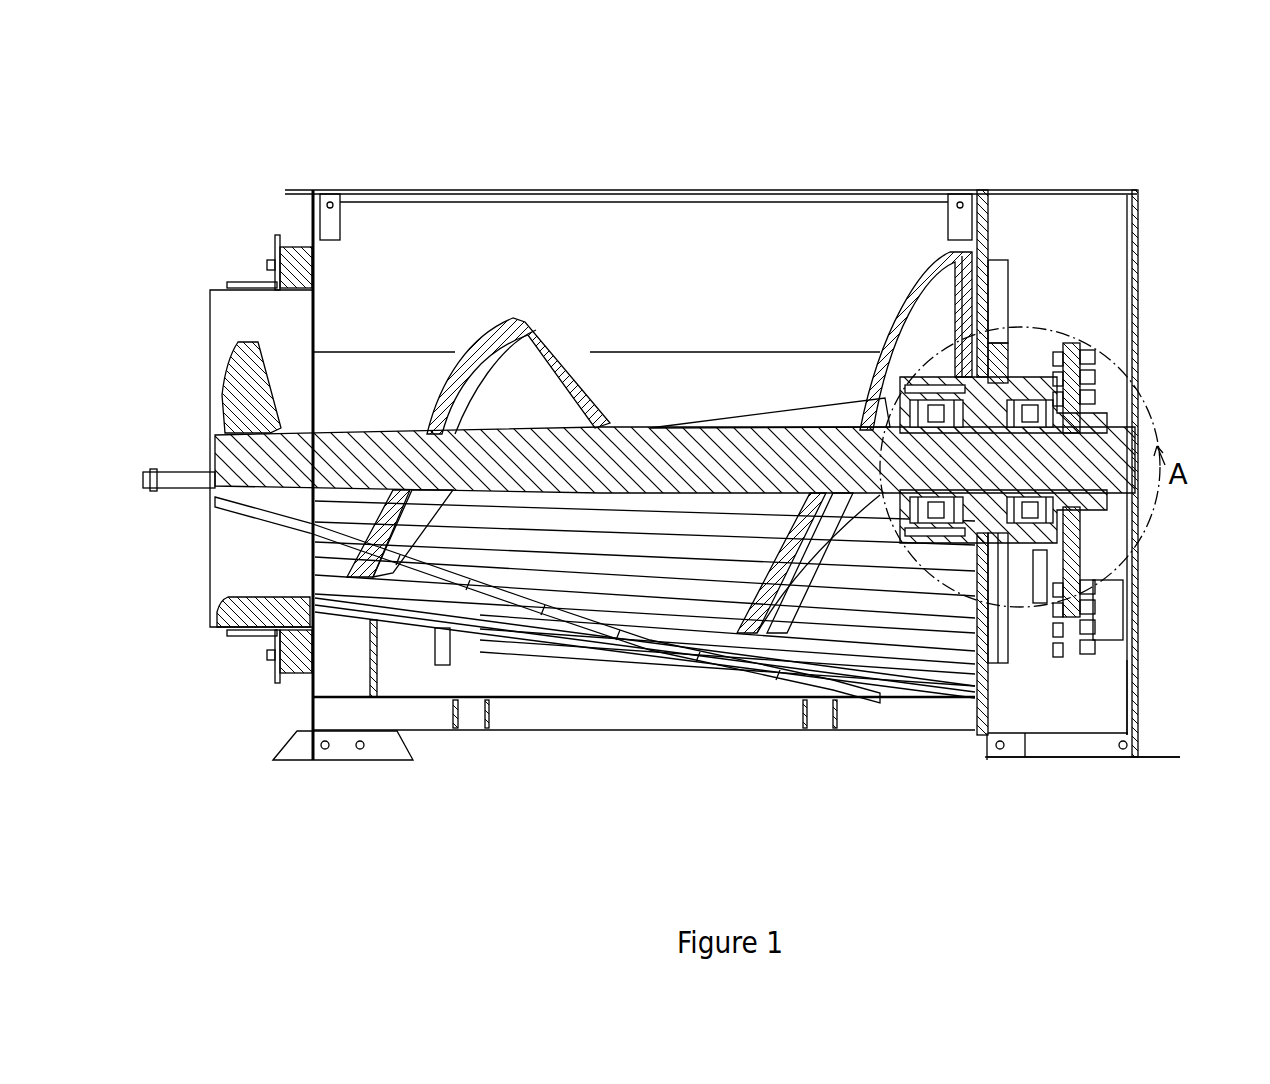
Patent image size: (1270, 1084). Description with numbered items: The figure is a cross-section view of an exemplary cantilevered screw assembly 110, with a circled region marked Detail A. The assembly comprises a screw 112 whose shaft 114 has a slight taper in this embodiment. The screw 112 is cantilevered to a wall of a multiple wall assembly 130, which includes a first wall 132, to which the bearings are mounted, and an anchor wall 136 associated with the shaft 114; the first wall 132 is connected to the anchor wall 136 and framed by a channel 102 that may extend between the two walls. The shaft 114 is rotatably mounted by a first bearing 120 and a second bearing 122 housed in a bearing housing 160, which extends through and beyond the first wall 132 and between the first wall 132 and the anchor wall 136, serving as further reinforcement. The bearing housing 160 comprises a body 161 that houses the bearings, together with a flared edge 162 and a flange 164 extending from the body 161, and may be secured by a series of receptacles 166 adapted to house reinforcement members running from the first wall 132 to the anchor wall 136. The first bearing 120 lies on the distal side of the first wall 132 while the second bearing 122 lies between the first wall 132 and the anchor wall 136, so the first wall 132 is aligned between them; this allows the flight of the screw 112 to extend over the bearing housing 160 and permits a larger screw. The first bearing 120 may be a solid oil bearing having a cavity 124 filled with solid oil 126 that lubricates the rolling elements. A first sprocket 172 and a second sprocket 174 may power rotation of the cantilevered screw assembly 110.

The channel 102 is at (1048, 745).
The cantilevered screw assembly 110 is at (798, 157).
The screw 112 is at (503, 325).
The shaft 114 is at (647, 440).
The first bearing 120 is at (935, 535).
The second bearing 122 is at (975, 600).
The cavity 124 is at (912, 525).
The solid oil 126 is at (880, 515).
The multiple wall assembly 130 is at (1079, 182).
The first wall 132 is at (980, 200).
The anchor wall 136 is at (1130, 668).
The bearing housing 160 is at (968, 545).
The body 161 is at (937, 377).
The flared edge 162 is at (1003, 262).
The flange 164 is at (1018, 307).
The receptacles 166 is at (1095, 652).
The first sprocket 172 is at (1057, 345).
The second sprocket 174 is at (1073, 683).